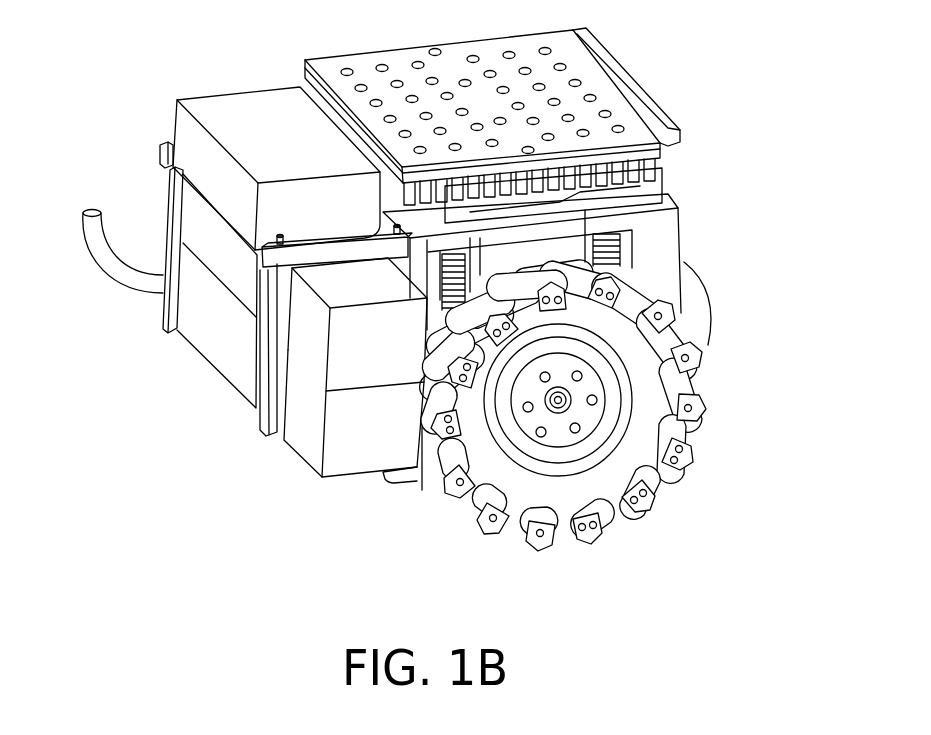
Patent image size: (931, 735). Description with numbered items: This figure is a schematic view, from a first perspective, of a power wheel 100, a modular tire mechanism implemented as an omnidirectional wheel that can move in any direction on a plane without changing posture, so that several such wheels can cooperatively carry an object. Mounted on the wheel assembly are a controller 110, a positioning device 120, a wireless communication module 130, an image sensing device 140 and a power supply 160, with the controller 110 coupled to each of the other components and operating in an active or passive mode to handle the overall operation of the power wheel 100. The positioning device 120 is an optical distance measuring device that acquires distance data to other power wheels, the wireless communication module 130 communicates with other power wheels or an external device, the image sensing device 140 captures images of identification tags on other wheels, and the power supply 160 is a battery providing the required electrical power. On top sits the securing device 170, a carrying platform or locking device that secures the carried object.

The power wheel 100 is at (777, 598).
The controller 110 is at (247, 107).
The positioning device 120 is at (222, 262).
The wireless communication module 130 is at (310, 350).
The image sensing device 140 is at (238, 362).
The power supply 160 is at (353, 457).
The securing device 170 is at (463, 50).